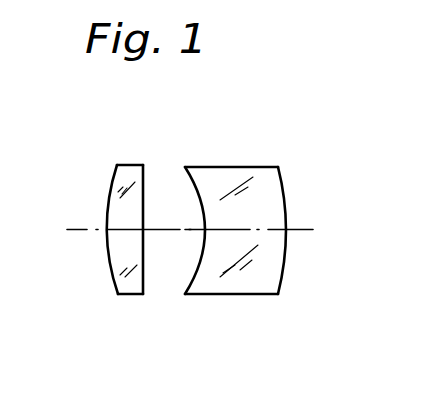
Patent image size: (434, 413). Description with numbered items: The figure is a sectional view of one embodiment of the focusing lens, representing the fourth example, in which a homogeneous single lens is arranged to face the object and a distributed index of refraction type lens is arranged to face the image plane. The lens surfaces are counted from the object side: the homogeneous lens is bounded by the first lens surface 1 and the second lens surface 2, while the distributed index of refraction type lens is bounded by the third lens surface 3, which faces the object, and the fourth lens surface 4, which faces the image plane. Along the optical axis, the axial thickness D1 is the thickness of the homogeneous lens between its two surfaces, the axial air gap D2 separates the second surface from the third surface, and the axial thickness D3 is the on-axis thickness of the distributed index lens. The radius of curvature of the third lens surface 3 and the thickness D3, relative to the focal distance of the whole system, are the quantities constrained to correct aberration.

The first lens surface 1 is at (115, 284).
The second lens surface 2 is at (144, 285).
The third lens surface 3 is at (200, 270).
The fourth lens surface 4 is at (283, 282).
The axial thickness of first lens D1 is at (126, 228).
The axial air gap D2 is at (171, 232).
The axial thickness of distributed index lens D3 is at (231, 229).